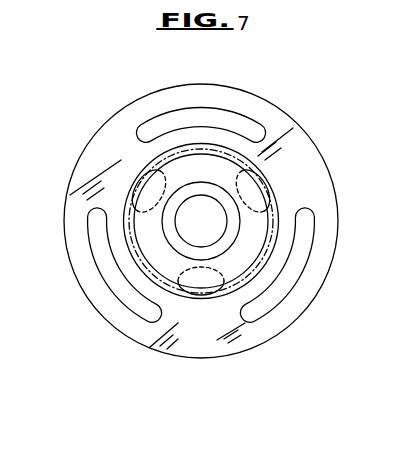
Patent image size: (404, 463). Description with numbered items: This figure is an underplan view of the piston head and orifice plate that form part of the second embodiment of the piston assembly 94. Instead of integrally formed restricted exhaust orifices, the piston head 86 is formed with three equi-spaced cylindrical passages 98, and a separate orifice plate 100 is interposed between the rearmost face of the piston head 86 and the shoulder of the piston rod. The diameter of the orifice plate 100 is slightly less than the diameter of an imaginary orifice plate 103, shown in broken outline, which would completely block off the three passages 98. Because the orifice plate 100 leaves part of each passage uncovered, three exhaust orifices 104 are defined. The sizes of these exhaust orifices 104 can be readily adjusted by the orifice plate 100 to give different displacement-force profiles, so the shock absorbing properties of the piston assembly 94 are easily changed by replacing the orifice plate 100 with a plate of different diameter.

The piston head 86 is at (283, 330).
The piston assembly 94 is at (193, 292).
The cylindrical passages 98 is at (270, 203).
The orifice plate 100 is at (250, 247).
The imaginary orifice plate 103 is at (120, 243).
The exhaust orifices 104 is at (132, 202).